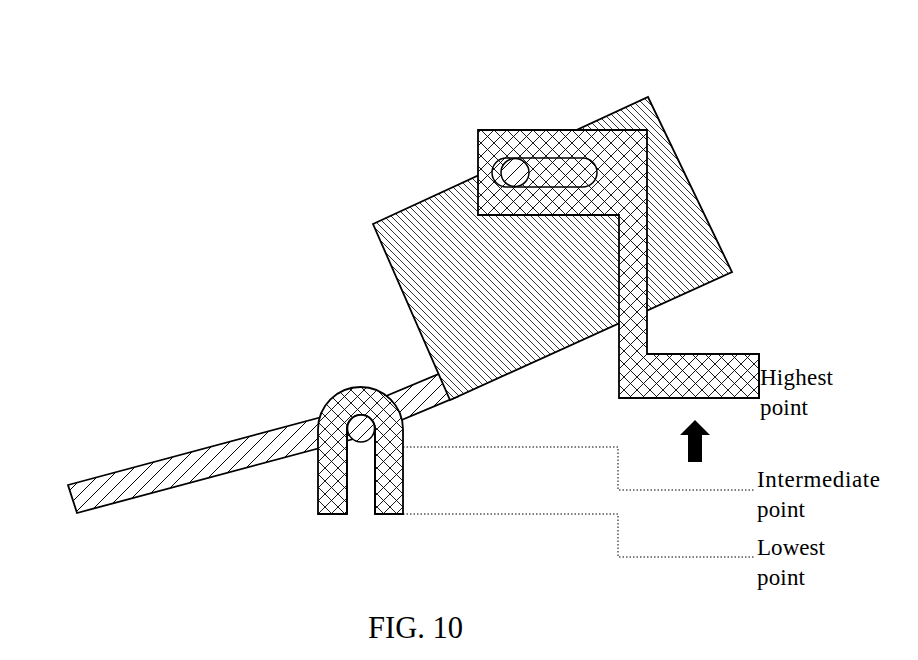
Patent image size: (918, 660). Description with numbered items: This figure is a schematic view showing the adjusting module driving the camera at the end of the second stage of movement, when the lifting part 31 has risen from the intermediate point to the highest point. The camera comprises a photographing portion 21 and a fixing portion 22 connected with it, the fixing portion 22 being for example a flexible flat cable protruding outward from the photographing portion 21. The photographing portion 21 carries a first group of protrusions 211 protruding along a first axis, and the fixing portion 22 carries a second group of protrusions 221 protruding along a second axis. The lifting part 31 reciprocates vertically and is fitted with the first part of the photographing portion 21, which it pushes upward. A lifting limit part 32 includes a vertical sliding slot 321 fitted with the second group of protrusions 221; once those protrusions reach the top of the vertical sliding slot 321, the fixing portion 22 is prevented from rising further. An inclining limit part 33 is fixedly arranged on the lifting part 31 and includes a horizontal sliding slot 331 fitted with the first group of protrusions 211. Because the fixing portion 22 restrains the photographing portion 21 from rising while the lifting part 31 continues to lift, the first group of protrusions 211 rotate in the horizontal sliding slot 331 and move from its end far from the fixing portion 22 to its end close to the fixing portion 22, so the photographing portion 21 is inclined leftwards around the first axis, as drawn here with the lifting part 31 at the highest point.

The photographing portion 21 is at (648, 97).
The first group of protrusions 211 is at (480, 170).
The fixing portion 22 is at (95, 503).
The second group of protrusions 221 is at (353, 387).
The lifting part 31 is at (738, 353).
The lifting limit part 32 is at (332, 398).
The vertical sliding slot 321 is at (362, 490).
The inclining limit part 33 is at (512, 128).
The horizontal sliding slot 331 is at (565, 128).